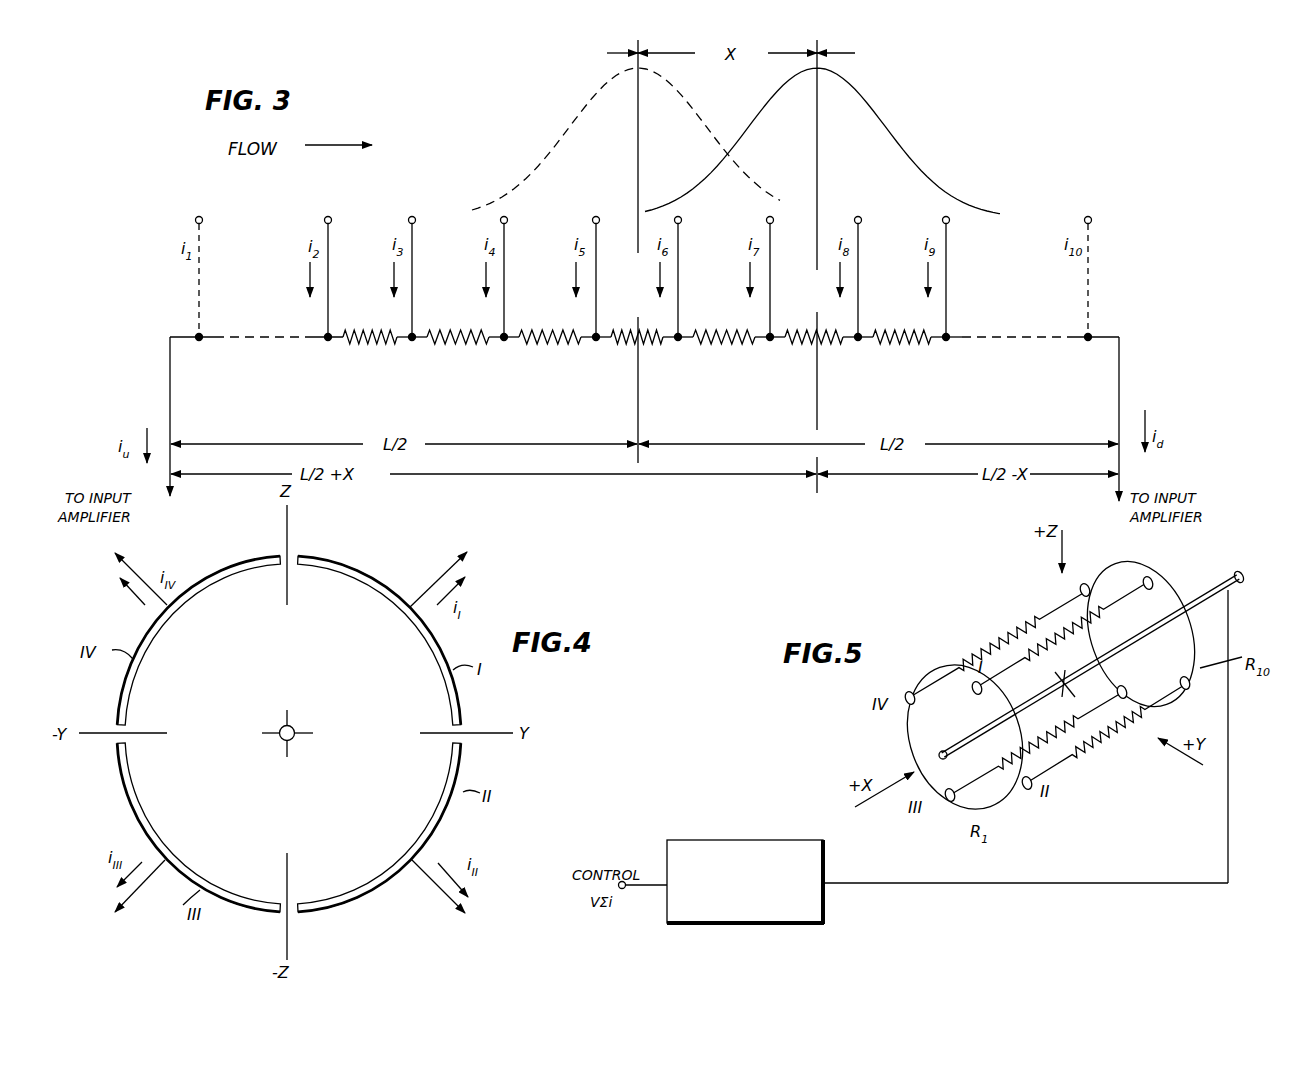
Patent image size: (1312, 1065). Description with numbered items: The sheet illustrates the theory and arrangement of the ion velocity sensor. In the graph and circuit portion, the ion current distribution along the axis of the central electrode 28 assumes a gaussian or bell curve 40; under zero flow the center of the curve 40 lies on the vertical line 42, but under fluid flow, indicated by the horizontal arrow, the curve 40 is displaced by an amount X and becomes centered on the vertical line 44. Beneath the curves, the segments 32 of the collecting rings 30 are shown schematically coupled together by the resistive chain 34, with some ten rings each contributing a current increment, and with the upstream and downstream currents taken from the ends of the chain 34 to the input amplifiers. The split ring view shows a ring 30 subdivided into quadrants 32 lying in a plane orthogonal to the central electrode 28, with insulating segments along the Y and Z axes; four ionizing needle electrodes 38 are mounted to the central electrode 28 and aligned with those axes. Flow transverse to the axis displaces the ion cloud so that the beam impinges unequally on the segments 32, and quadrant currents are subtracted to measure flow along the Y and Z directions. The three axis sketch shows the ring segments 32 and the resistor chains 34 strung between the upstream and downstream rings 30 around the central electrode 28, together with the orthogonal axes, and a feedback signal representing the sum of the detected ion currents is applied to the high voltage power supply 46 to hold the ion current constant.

In FIG. 4, the central electrode 28 is at (284, 729).
In FIG. 5, the central electrode 28 is at (1210, 590).
In FIG. 4, the concentric rings 30 is at (357, 551).
In FIG. 5, the concentric rings 30 is at (1087, 571).
In FIG. 3, the quadrants 32 is at (330, 218).
In FIG. 4, the quadrants 32 is at (381, 580).
In FIG. 5, the quadrants 32 is at (1132, 565).
In FIG. 3, the resistor chain 34 is at (703, 345).
In FIG. 5, the resistor chain 34 is at (998, 638).
In FIG. 4, the ionizing needle electrodes 38 is at (292, 720).
In FIG. 3, the curve 40 is at (583, 100).
In FIG. 3, the vertical line 42 is at (638, 134).
In FIG. 3, the vertical line 44 is at (817, 128).
In FIG. 5, the high voltage power supply 46 is at (768, 840).